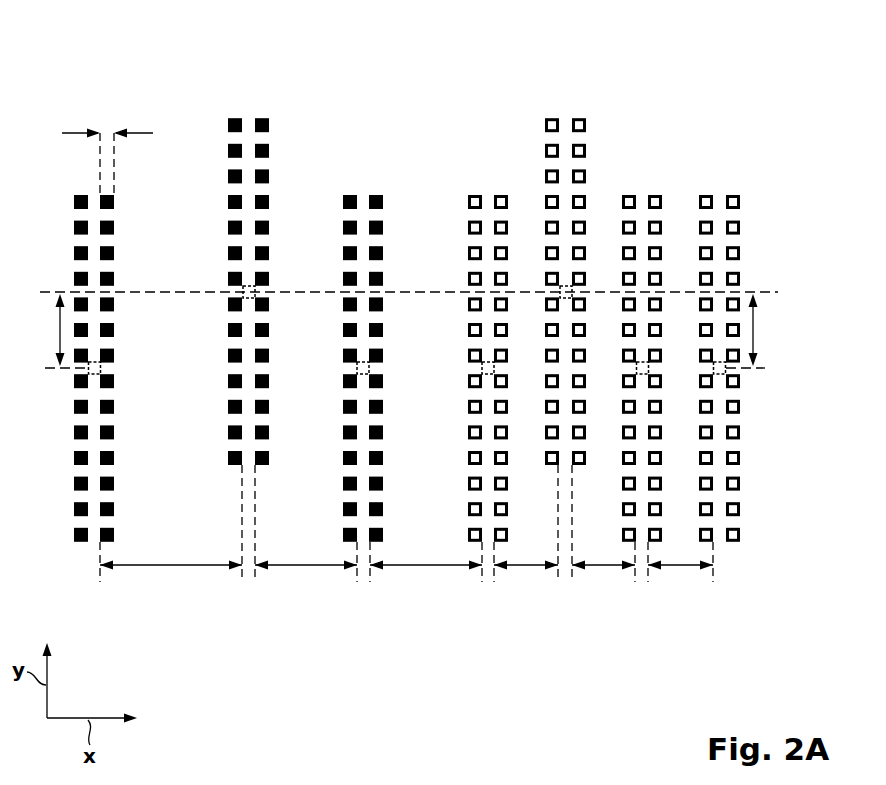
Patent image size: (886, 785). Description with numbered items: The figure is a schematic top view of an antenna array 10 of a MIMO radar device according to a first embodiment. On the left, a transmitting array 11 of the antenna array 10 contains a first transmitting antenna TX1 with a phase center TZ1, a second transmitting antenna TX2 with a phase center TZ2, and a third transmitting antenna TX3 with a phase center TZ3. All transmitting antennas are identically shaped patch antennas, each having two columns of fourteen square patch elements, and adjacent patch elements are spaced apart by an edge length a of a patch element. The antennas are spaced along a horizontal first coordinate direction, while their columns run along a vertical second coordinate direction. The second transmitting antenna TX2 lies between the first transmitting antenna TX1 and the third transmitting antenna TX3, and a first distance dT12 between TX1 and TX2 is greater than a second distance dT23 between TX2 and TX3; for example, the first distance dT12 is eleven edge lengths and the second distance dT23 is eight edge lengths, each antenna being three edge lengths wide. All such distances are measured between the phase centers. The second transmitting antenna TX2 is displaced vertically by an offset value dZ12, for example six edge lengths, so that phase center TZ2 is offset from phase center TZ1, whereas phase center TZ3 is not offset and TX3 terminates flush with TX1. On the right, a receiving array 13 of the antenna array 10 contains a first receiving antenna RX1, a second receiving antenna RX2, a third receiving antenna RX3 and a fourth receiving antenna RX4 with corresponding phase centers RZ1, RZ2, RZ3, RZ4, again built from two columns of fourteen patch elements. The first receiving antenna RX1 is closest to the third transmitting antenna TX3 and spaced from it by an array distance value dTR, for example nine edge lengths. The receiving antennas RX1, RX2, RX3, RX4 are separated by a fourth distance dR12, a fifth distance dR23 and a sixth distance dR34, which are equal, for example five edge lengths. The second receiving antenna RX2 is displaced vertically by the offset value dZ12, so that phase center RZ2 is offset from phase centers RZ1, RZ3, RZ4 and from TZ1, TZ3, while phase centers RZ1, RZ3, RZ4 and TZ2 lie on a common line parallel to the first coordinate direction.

The antenna array 10 is at (125, 85).
The transmitting array 11 is at (393, 107).
The receiving array 13 is at (760, 107).
The edge length a is at (142, 136).
The first transmitting antenna TX1 is at (70, 411).
The second transmitting antenna TX2 is at (222, 373).
The third transmitting antenna TX3 is at (362, 386).
The first receiving antenna RX1 is at (462, 413).
The second receiving antenna RX2 is at (592, 368).
The third receiving antenna RX3 is at (640, 385).
The fourth receiving antenna RX4 is at (717, 385).
The phase center of first transmitting antenna TZ1 is at (101, 368).
The phase center of second transmitting antenna TZ2 is at (256, 292).
The phase center of third transmitting antenna TZ3 is at (356, 367).
The phase center of first receiving antenna RZ1 is at (482, 368).
The phase center of second receiving antenna RZ2 is at (560, 291).
The phase center of third receiving antenna RZ3 is at (636, 367).
The phase center of fourth receiving antenna RZ4 is at (727, 368).
The offset value dZ12 is at (58, 339).
The first distance dT12 is at (173, 567).
The second distance dT23 is at (303, 567).
The array distance value dTR is at (427, 567).
The fourth distance dR12 is at (526, 567).
The fifth distance dR23 is at (603, 567).
The sixth distance dR34 is at (680, 567).